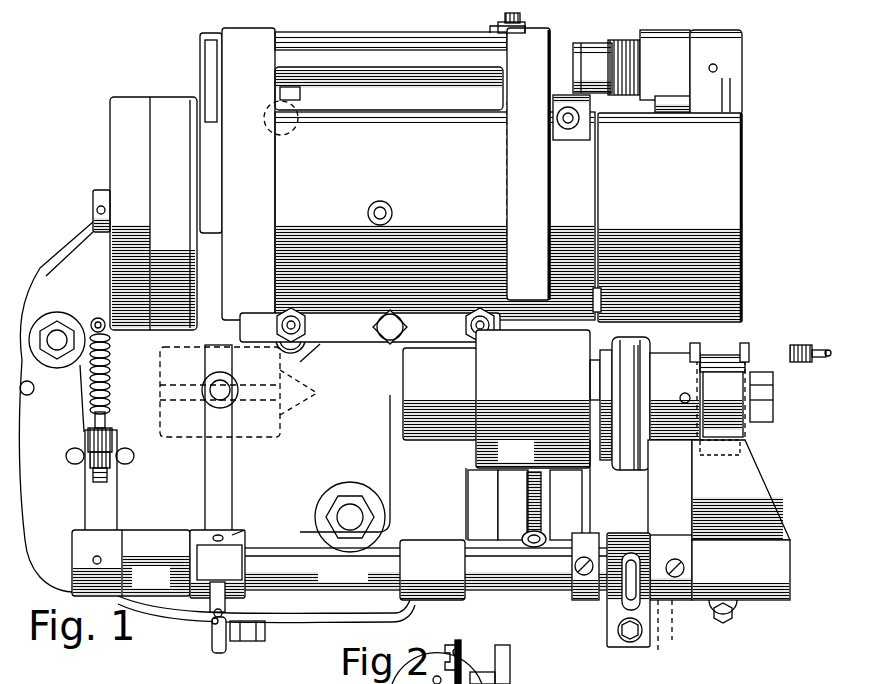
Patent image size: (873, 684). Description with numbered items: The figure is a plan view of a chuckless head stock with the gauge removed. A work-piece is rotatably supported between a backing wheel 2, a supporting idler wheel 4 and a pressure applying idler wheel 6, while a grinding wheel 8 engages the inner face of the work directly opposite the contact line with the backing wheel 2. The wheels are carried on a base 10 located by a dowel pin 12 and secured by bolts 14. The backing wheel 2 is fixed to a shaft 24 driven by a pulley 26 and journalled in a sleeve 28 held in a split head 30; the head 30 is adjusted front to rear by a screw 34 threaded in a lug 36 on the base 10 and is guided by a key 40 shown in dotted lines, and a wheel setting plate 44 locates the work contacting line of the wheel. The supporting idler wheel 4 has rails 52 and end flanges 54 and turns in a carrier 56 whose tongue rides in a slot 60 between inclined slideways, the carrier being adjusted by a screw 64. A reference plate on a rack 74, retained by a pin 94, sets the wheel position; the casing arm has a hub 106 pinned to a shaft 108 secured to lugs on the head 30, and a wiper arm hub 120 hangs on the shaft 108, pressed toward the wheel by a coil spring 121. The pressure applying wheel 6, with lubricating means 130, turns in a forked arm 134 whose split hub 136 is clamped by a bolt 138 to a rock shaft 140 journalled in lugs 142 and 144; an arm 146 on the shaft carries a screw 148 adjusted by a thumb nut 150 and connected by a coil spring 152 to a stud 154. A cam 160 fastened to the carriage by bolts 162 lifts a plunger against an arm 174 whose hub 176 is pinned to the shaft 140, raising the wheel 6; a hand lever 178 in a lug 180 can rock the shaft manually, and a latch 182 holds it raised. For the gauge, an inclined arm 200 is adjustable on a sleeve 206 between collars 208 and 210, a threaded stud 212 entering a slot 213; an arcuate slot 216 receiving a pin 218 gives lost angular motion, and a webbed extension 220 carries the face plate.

In FIG. 1, the backing wheel 2 is at (670, 217).
In FIG. 1, the supporting idler wheel 4 is at (645, 403).
In FIG. 1, the pressure applying idler wheel 6 is at (735, 407).
In FIG. 1, the grinding wheel 8 is at (801, 364).
In FIG. 1, the base 10 is at (220, 391).
In FIG. 1, the dowel pin 12 is at (33, 392).
In FIG. 1, the bolts 14 is at (57, 330).
In FIG. 1, the shaft 24 is at (93, 196).
In FIG. 1, the pulley 26 is at (153, 213).
In FIG. 1, the sleeve 28 is at (571, 127).
In FIG. 1, the split head 30 is at (435, 216).
In FIG. 1, the screw 34 is at (521, 18).
In FIG. 1, the lug 36 is at (497, 30).
In FIG. 1, the key 40 is at (512, 175).
In FIG. 1, the wheel setting plate 44 is at (603, 296).
In FIG. 1, the peripheral ribs or rails 52 is at (705, 350).
In FIG. 1, the end flanges 54 is at (746, 350).
In FIG. 1, the slidable block or carrier 56 is at (496, 399).
In FIG. 1, the slot 60 is at (519, 505).
In FIG. 1, the screw 64 is at (532, 547).
In FIG. 2, the rack 74 is at (452, 646).
In FIG. 2, the pin 94 is at (474, 649).
In FIG. 1, the hub 106 is at (716, 72).
In FIG. 1, the shaft 108 is at (586, 48).
In FIG. 1, the hub 120 is at (644, 95).
In FIG. 1, the coil spring 121 is at (622, 45).
In FIG. 1, the lubricating means 130 is at (684, 393).
In FIG. 1, the forked arm 134 is at (741, 490).
In FIG. 1, the split hub 136 is at (741, 570).
In FIG. 1, the bolt 138 is at (738, 616).
In FIG. 1, the rock shaft 140 is at (383, 569).
In FIG. 1, the lug 142 is at (432, 570).
In FIG. 1, the lug 144 is at (131, 563).
In FIG. 1, the arm 146 is at (117, 493).
In FIG. 1, the screw 148 is at (93, 476).
In FIG. 1, the thumb nut 150 is at (113, 450).
In FIG. 1, the coil spring 152 is at (110, 398).
In FIG. 1, the screw anchoring stud 154 is at (106, 329).
In FIG. 1, the cam 160 is at (205, 394).
In FIG. 1, the bolts 162 is at (318, 393).
In FIG. 1, the arm 174 is at (217, 471).
In FIG. 1, the hub 176 is at (245, 540).
In FIG. 1, the hand lever 178 is at (212, 645).
In FIG. 1, the lug 180 is at (207, 584).
In FIG. 1, the latch 182 is at (266, 632).
In FIG. 1, the inclined arm 200 is at (636, 570).
In FIG. 1, the sleeve 206 is at (606, 600).
In FIG. 1, the collar 208 is at (678, 602).
In FIG. 1, the collar 210 is at (588, 602).
In FIG. 1, the threaded stud 212 is at (626, 640).
In FIG. 1, the slot 213 is at (671, 557).
In FIG. 1, the arcuate slot 216 is at (658, 651).
In FIG. 1, the pin 218 is at (674, 642).
In FIG. 1, the webbed extension 220 is at (650, 470).